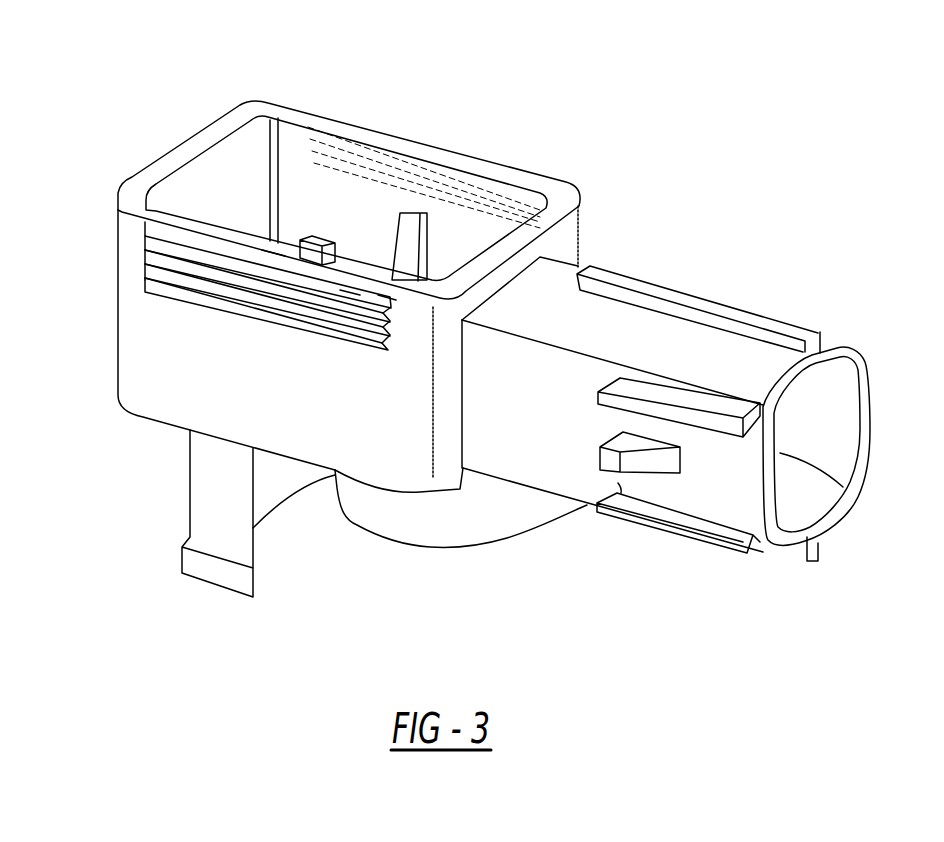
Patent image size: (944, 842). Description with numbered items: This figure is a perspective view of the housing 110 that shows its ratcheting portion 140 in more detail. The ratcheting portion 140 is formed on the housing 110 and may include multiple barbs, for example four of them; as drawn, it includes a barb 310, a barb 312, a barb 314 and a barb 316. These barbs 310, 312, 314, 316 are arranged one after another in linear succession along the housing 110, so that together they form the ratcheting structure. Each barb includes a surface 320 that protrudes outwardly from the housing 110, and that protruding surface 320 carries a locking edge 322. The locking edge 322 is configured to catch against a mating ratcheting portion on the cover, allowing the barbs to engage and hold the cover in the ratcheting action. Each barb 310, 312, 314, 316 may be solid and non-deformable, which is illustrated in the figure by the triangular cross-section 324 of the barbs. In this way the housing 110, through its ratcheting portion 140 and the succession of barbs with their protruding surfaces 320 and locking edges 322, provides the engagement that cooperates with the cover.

The housing 110 is at (228, 128).
The ratcheting portion 140 is at (404, 331).
The barb 310 is at (145, 234).
The barb 312 is at (143, 245).
The barb 314 is at (145, 260).
The barb 316 is at (173, 282).
The surface 320 is at (273, 262).
The locking edge 322 is at (350, 293).
The triangular cross-section 324 is at (387, 297).